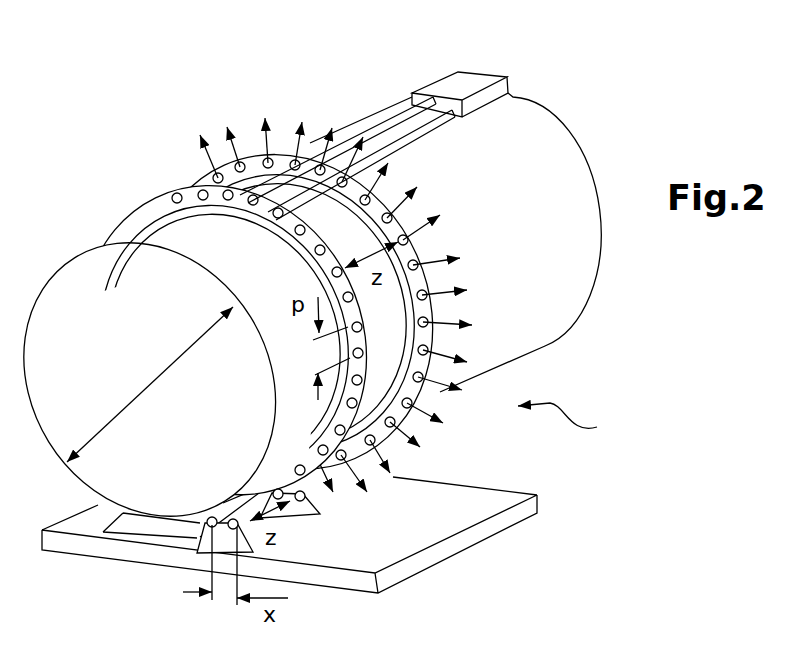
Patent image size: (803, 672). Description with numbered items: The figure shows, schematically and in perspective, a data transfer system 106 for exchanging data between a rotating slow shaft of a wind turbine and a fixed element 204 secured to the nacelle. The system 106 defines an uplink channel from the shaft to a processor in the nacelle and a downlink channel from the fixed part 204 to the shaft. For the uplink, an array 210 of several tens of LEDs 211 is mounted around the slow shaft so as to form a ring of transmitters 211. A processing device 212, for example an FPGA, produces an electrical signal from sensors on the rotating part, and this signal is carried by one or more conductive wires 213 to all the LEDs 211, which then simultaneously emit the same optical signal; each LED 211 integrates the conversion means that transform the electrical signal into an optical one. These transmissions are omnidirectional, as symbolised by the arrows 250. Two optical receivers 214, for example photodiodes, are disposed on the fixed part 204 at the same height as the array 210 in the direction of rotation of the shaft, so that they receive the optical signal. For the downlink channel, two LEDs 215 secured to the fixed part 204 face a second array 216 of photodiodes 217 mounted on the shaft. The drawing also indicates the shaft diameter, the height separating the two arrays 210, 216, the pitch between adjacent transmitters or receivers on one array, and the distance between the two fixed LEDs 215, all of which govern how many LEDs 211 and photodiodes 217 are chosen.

The transfer system 106 is at (581, 419).
The fixed element 204 is at (353, 552).
The array of LEDs 210 is at (413, 250).
The LEDs 211 is at (427, 280).
The processing device 212 is at (500, 92).
The conductive wires 213 is at (390, 113).
The optical receivers 214 is at (310, 500).
The LEDs 215 is at (203, 523).
The second array 216 is at (237, 212).
The photodiodes 217 is at (177, 193).
The arrows 250 is at (213, 170).